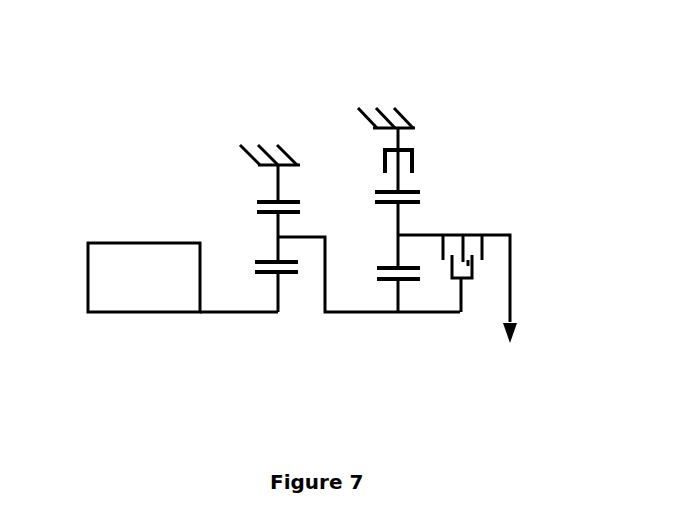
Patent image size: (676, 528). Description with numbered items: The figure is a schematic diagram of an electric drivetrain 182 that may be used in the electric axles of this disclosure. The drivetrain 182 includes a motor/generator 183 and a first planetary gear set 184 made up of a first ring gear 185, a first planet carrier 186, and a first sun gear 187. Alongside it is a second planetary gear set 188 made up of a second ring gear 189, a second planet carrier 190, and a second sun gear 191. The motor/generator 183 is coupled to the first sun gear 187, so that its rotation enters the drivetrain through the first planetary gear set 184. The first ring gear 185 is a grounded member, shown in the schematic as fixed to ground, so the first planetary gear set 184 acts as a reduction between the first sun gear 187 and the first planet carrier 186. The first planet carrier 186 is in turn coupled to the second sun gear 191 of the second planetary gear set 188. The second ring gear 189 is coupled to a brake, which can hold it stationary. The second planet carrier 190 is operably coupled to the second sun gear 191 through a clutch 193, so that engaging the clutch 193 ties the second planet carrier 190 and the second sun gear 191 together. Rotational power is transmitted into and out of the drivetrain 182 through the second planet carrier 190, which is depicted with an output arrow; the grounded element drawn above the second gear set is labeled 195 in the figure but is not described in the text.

The electric drivetrain 182 is at (176, 85).
The motor/generator 183 is at (123, 242).
The first planetary gear set 184 is at (268, 330).
The first ring gear 185 is at (296, 163).
The first planet carrier 186 is at (277, 247).
The first sun gear 187 is at (283, 298).
The second planetary gear set 188 is at (394, 340).
The second ring gear 189 is at (400, 180).
The second planet carrier 190 is at (400, 220).
The second sun gear 191 is at (398, 300).
The clutch 193 is at (472, 268).
The second ring gear R2 195 is at (413, 153).